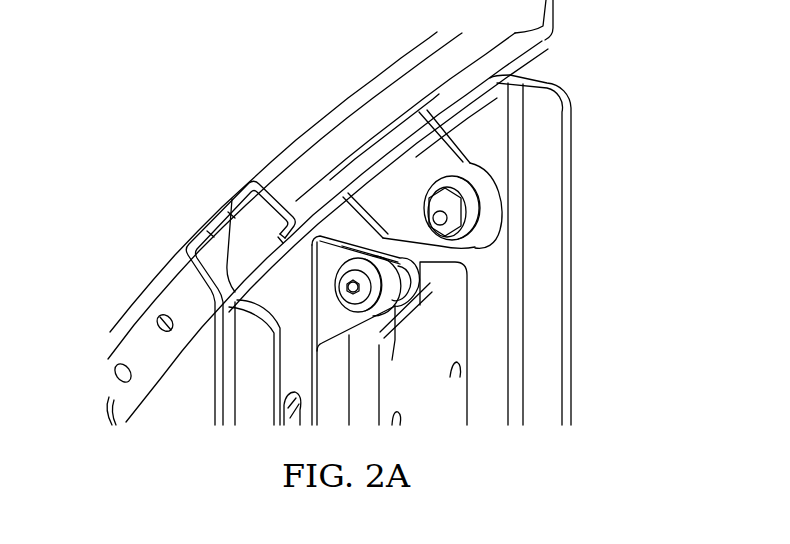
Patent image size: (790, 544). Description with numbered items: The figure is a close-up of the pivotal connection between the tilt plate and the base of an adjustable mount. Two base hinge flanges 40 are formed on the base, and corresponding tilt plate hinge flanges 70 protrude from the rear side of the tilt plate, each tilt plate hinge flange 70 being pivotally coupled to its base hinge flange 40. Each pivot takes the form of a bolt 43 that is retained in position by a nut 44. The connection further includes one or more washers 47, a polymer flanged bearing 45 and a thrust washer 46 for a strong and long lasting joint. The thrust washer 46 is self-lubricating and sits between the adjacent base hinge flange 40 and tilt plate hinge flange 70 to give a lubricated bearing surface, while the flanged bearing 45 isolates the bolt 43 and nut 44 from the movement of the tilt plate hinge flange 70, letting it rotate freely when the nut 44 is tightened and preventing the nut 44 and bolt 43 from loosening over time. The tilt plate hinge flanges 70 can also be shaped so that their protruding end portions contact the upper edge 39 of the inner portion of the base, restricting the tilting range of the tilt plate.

The upper edge 39 is at (394, 340).
The base hinge flange 40 is at (480, 176).
The bolt 43 is at (390, 322).
The nut 44 is at (450, 192).
The polymer flanged bearing 45 is at (445, 214).
The thrust washer 46 is at (405, 262).
The washer 47 is at (396, 277).
The tilt plate hinge flange 70 is at (418, 197).